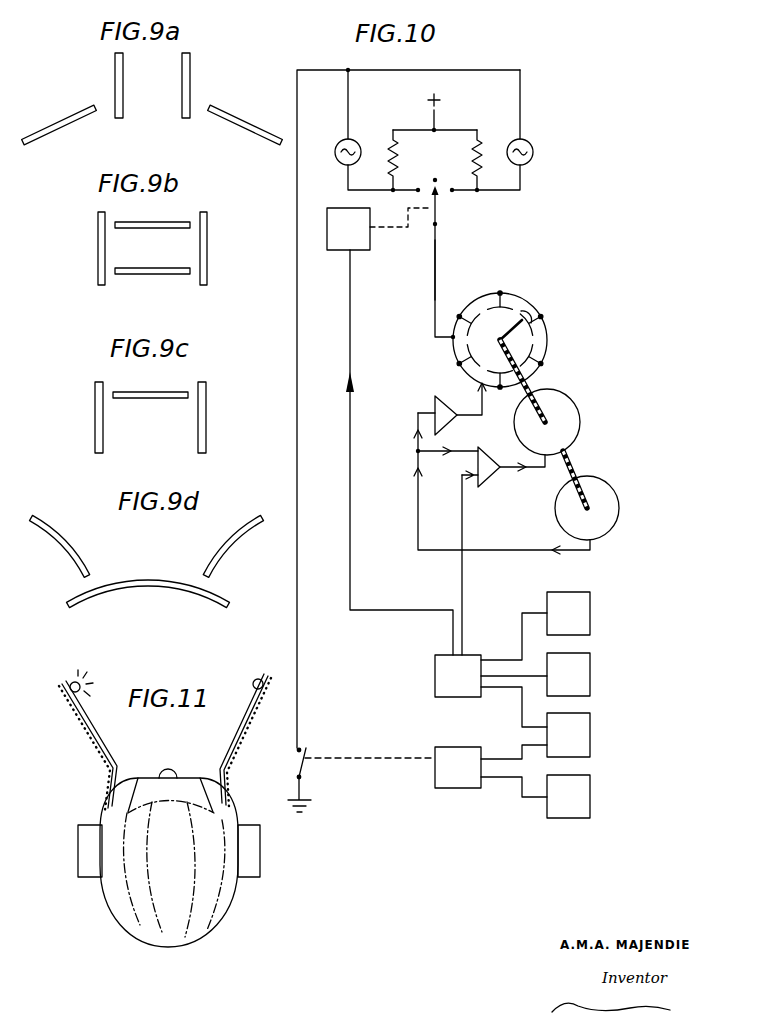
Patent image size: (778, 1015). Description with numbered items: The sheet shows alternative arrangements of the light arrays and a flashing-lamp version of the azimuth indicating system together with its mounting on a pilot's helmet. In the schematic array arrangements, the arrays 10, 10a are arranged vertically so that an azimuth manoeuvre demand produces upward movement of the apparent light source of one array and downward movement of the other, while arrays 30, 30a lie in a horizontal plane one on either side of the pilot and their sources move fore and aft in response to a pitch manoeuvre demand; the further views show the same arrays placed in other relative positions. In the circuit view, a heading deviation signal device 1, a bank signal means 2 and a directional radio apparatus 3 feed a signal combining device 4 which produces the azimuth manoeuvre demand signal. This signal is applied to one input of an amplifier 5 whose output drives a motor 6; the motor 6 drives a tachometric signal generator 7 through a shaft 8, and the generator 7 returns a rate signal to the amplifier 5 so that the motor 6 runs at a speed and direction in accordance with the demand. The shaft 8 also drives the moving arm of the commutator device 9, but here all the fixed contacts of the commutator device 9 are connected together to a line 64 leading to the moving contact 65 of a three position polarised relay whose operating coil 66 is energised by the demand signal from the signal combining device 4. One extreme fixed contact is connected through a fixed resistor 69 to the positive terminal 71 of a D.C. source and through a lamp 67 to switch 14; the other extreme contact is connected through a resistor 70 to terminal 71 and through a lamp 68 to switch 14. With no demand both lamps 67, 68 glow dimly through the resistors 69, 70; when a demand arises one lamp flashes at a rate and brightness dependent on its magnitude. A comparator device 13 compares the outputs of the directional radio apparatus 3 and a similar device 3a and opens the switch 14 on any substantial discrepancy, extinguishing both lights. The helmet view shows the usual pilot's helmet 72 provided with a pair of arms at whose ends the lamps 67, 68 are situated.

In FIG. 10, the heading deviation signal device 1 is at (580, 620).
In FIG. 10, the bank signal means 2 is at (585, 676).
In FIG. 10, the directional radio apparatus 3 is at (576, 734).
In FIG. 10, the second directional radio device 3a is at (576, 797).
In FIG. 10, the signal combining device 4 is at (462, 686).
In FIG. 10, the amplifier 5 is at (495, 465).
In FIG. 10, the motor 6 is at (561, 425).
In FIG. 10, the tachometric signal generator 7 is at (603, 526).
In FIG. 10, the shaft 8 is at (537, 396).
In FIG. 10, the commutator device 9 is at (520, 342).
In FIG. 9A, the light bulb array 10 is at (120, 76).
In FIG. 9B, the light bulb array 10 is at (155, 219).
In FIG. 9C, the light bulb array 10 is at (154, 392).
In FIG. 9D, the light bulb array 10 is at (198, 606).
In FIG. 9B, the second light bulb array 10a is at (152, 274).
In FIG. 10, the comparator device 13 is at (448, 779).
In FIG. 10, the switch 14 is at (305, 774).
In FIG. 9A, the pitch array 30 is at (62, 128).
In FIG. 9B, the pitch array 30 is at (98, 255).
In FIG. 9C, the pitch array 30 is at (95, 421).
In FIG. 9D, the pitch array 30 is at (72, 549).
In FIG. 9A, the second pitch array 30a is at (249, 128).
In FIG. 9B, the second pitch array 30a is at (207, 255).
In FIG. 9C, the second pitch array 30a is at (206, 428).
In FIG. 9D, the second pitch array 30a is at (228, 546).
In FIG. 10, the line 64 is at (438, 288).
In FIG. 10, the moving contact 65 is at (446, 199).
In FIG. 10, the relay operating coil 66 is at (371, 244).
In FIG. 11, the lamp 67 is at (82, 679).
In FIG. 10, the lamp 67 is at (357, 143).
In FIG. 11, the lamp 68 is at (254, 680).
In FIG. 10, the lamp 68 is at (515, 143).
In FIG. 10, the fixed resistor 69 is at (395, 179).
In FIG. 10, the resistor 70 is at (476, 179).
In FIG. 10, the positive terminal of D.C. source 71 is at (451, 105).
In FIG. 11, the pilot's helmet 72 is at (232, 880).